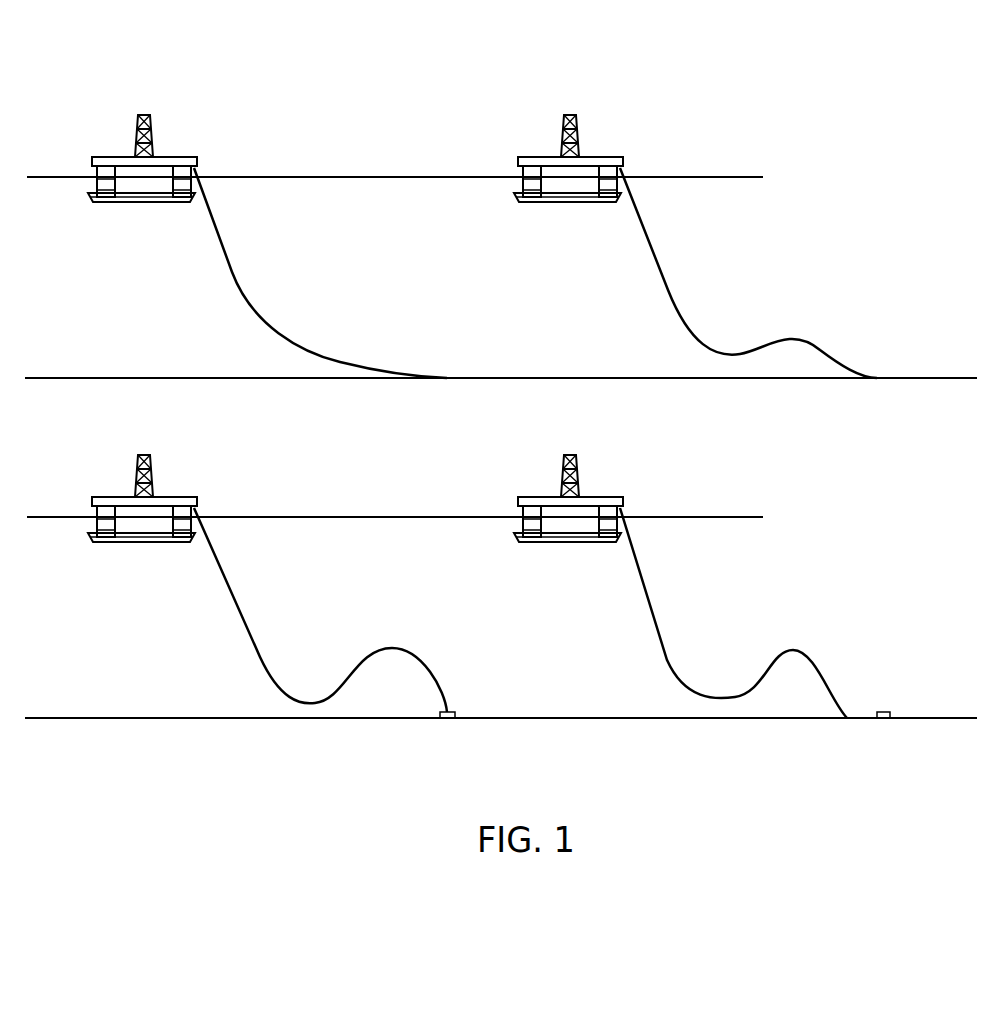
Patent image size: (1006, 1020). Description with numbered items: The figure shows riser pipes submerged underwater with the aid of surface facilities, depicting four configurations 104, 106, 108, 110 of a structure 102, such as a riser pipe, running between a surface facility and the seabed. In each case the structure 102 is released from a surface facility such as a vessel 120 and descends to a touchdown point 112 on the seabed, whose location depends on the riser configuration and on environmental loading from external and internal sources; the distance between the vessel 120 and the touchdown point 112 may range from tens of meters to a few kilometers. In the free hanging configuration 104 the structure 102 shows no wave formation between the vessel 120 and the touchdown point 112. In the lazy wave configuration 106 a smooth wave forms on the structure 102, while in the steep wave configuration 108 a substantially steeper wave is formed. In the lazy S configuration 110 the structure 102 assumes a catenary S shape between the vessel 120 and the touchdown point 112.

The structure 102 is at (228, 263).
The free hanging configuration 104 is at (186, 112).
The lazy wave configuration 106 is at (614, 112).
The steep wave configuration 108 is at (188, 452).
The lazy S configuration 110 is at (613, 454).
The touchdown point 112 is at (455, 377).
The vessel 120 is at (96, 180).